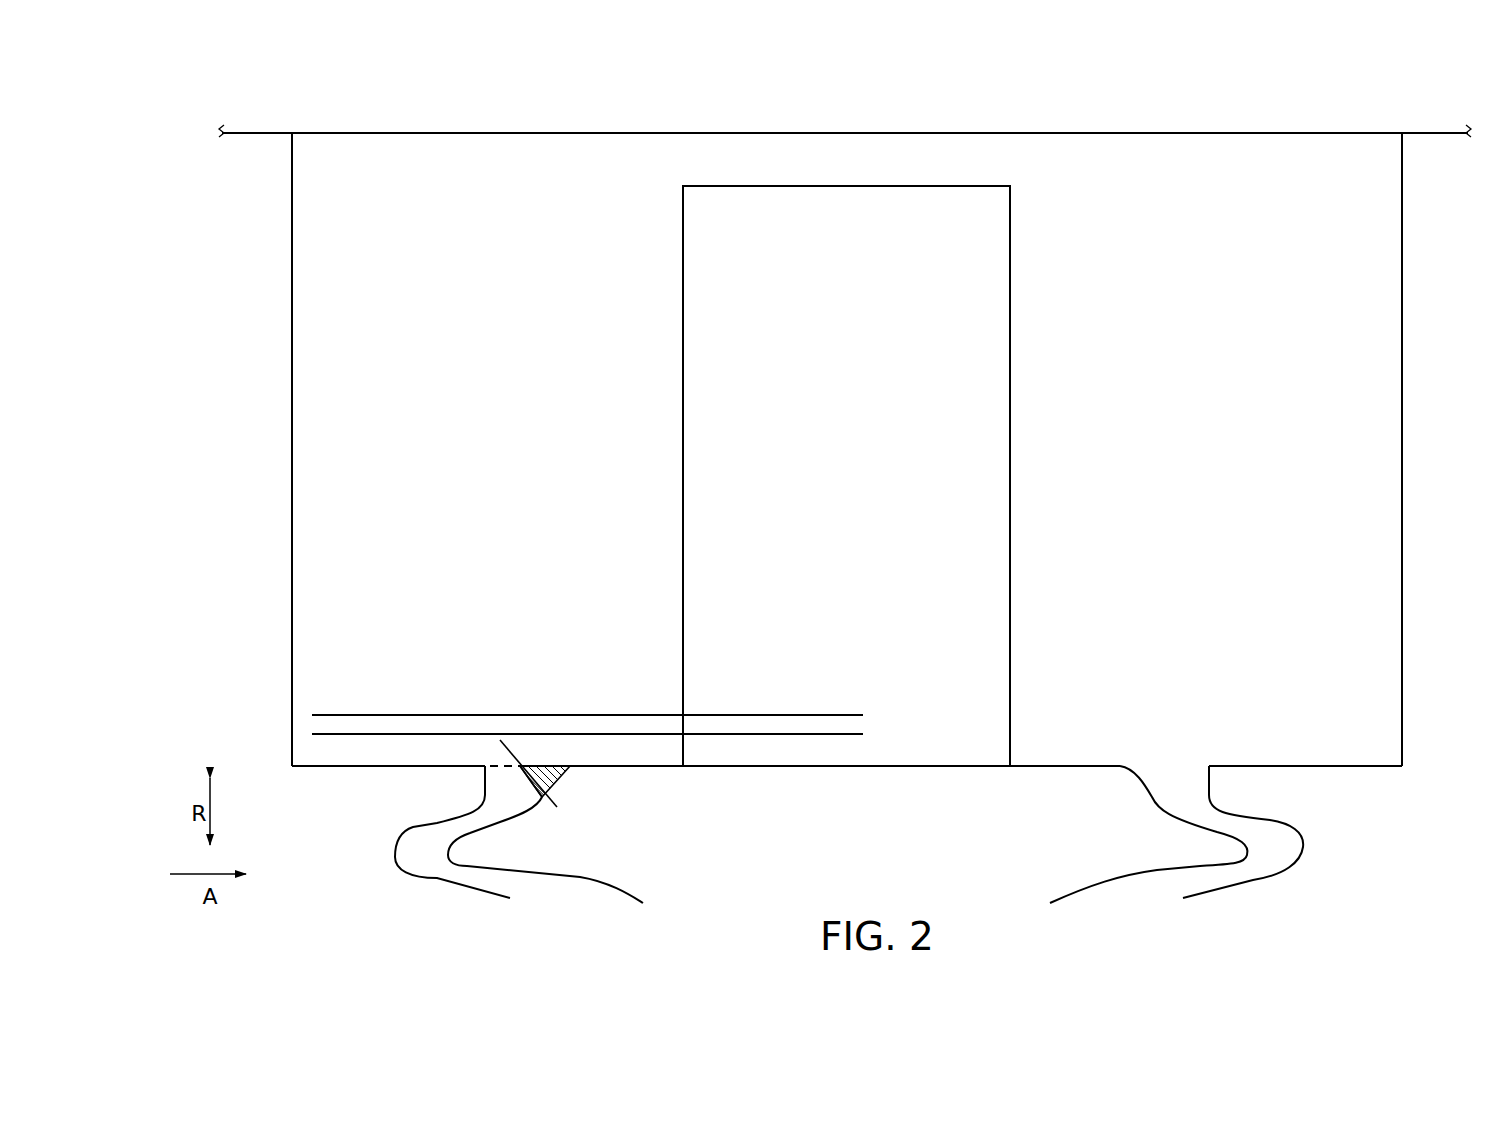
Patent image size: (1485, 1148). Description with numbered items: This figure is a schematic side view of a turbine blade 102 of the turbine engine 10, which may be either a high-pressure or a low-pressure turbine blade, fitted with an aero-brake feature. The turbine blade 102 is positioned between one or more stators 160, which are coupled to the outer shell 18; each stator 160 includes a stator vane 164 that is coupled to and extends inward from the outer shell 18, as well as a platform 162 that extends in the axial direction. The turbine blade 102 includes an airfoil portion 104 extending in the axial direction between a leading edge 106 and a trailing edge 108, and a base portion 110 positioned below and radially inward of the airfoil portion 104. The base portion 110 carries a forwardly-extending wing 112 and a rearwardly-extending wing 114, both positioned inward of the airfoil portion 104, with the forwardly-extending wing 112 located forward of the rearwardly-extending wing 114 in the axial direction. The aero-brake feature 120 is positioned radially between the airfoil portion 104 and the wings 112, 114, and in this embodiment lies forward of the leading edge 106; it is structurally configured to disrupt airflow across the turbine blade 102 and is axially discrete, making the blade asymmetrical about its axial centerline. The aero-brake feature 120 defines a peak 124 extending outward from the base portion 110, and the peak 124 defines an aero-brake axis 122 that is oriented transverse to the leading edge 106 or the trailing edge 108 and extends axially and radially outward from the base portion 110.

The turbine engine 10 is at (749, 408).
The outer shell 18 is at (1047, 133).
The turbine blade 102 is at (786, 427).
The airfoil portion 104 is at (790, 230).
The leading edge 106 is at (683, 400).
The trailing edge 108 is at (1010, 393).
The base portion 110 is at (1149, 782).
The forwardly-extending wing 112 is at (463, 853).
The rearwardly-extending wing 114 is at (1230, 853).
The aero-brake feature 120 is at (591, 808).
The aero-brake axis 122 is at (500, 740).
The peak 124 is at (540, 766).
The stator 160 is at (847, 714).
The platform 162 is at (453, 766).
The stator vane 164 is at (292, 447).